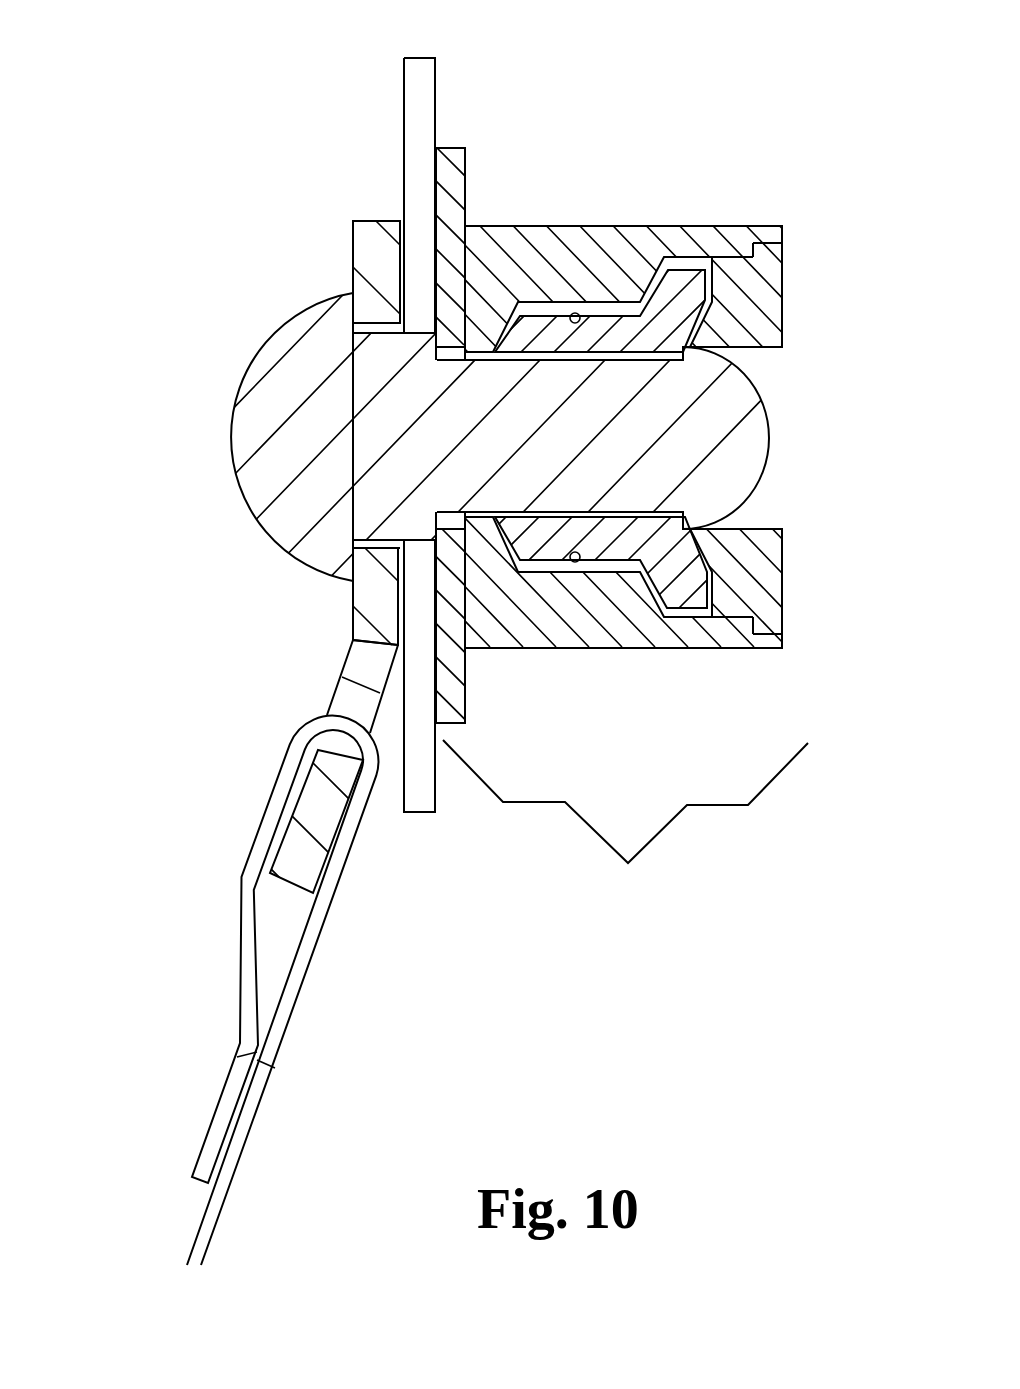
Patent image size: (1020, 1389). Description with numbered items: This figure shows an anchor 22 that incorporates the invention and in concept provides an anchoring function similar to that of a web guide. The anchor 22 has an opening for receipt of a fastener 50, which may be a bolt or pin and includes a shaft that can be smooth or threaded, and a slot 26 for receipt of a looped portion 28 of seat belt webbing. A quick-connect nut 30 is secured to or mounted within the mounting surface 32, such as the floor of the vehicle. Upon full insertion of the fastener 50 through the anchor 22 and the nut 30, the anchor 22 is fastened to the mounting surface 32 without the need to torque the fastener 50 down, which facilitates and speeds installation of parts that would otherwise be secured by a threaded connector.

The anchor 22 is at (353, 206).
The slot 26 is at (326, 673).
The looped portion of seat belt webbing 28 is at (230, 1034).
The quick-connect nut 30 is at (625, 831).
The mounting surface 32 is at (450, 65).
The fastener 50 is at (253, 371).